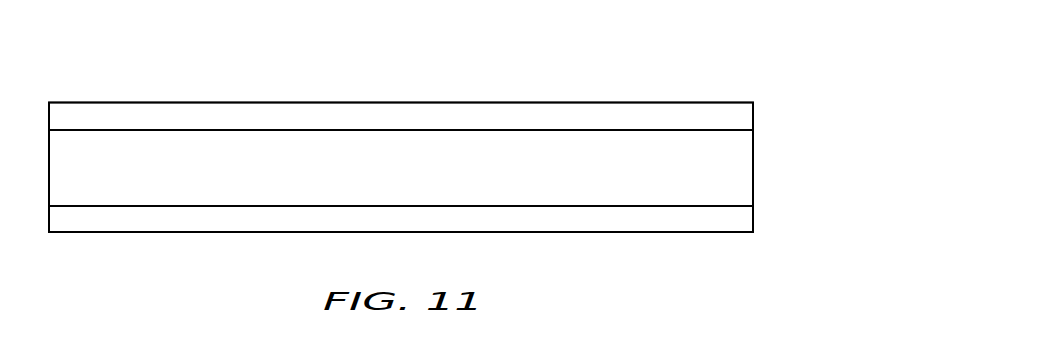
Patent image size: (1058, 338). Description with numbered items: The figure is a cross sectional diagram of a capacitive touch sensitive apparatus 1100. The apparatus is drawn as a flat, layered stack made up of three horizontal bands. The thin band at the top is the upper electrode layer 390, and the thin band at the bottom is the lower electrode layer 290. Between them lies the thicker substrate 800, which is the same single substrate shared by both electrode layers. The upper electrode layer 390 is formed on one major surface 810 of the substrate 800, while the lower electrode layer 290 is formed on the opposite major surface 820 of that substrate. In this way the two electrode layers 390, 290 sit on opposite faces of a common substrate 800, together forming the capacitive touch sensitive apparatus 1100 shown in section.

The capacitive touch sensitive apparatus 1100 is at (650, 45).
The upper electrode layer 390 is at (740, 115).
The substrate 800 is at (740, 171).
The lower electrode layer 290 is at (740, 219).
The major surface 810 is at (292, 128).
The major surface 820 is at (230, 207).